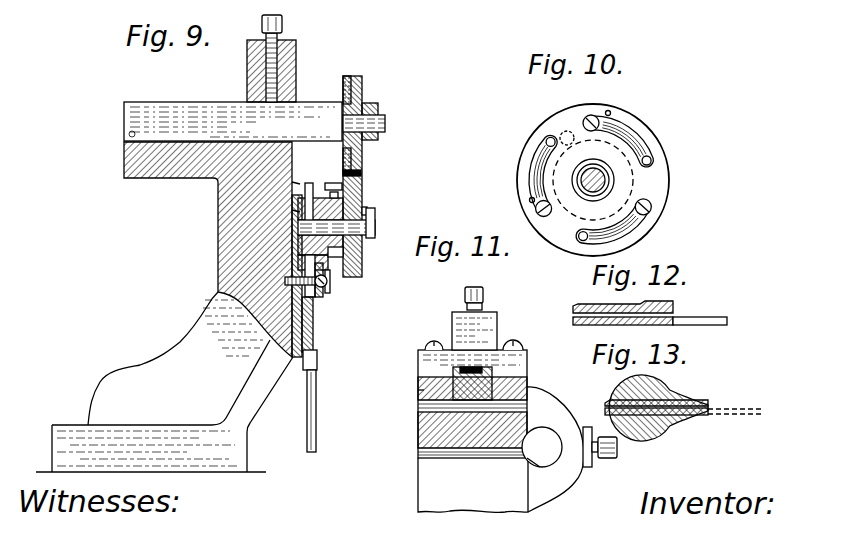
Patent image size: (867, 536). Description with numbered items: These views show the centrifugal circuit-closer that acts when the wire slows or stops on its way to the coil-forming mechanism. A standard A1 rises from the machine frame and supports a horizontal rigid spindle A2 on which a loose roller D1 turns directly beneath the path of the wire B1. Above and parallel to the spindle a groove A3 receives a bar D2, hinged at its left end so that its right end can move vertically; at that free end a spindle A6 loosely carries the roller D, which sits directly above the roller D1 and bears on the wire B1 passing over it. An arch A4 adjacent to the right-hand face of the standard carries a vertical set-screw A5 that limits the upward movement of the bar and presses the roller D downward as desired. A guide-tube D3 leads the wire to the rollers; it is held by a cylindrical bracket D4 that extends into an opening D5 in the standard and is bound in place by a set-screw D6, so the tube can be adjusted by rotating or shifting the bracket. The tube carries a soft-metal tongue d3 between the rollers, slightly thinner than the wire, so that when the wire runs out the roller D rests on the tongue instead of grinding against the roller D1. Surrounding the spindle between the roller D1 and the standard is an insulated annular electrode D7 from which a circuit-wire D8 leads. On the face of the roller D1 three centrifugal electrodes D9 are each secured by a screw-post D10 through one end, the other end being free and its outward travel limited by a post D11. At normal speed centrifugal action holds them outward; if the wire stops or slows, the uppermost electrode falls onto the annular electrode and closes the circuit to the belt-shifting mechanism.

In FIG. 9, the standard A1 is at (164, 382).
In FIG. 11, the standard A1 is at (505, 450).
In FIG. 9, the spindle A2 is at (375, 221).
In FIG. 9, the groove A3 is at (192, 179).
In FIG. 11, the groove A3 is at (418, 390).
In FIG. 9, the arch A4 is at (297, 64).
In FIG. 11, the arch A4 is at (452, 334).
In FIG. 9, the set-screw A5 is at (283, 22).
In FIG. 11, the set-screw A5 is at (465, 295).
In FIG. 9, the spindle A6 is at (385, 124).
In FIG. 9, the wire B1 is at (342, 180).
In FIG. 9, the roller D is at (362, 96).
In FIG. 9, the roller D1 is at (362, 203).
In FIG. 9, the bar D2 is at (233, 121).
In FIG. 11, the bar D2 is at (493, 387).
In FIG. 12, the guide-tube D3 is at (590, 305).
In FIG. 13, the guide-tube D3 is at (610, 400).
In FIG. 11, the bracket D4 is at (542, 447).
In FIG. 13, the bracket D4 is at (668, 387).
In FIG. 11, the opening D5 is at (528, 462).
In FIG. 11, the set-screw D6 is at (606, 458).
In FIG. 9, the annular electrode D7 is at (292, 210).
In FIG. 9, the circuit-wire D8 is at (317, 406).
In FIG. 9, the centrifugal electrodes D9 is at (292, 182).
In FIG. 10, the centrifugal electrodes D9 is at (648, 134).
In FIG. 9, the screw-post D10 is at (330, 278).
In FIG. 10, the screw-post D10 is at (591, 115).
In FIG. 10, the hole D11 is at (610, 112).
In FIG. 9, the tongue d3 is at (362, 174).
In FIG. 12, the tongue d3 is at (708, 317).
In FIG. 13, the tongue d3 is at (745, 409).